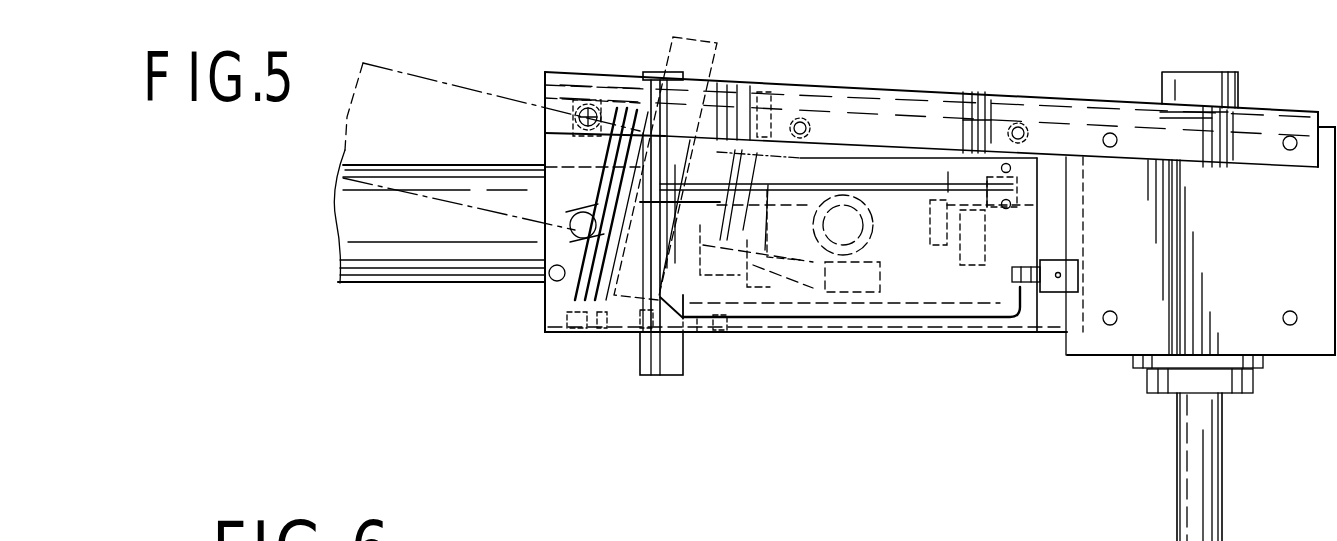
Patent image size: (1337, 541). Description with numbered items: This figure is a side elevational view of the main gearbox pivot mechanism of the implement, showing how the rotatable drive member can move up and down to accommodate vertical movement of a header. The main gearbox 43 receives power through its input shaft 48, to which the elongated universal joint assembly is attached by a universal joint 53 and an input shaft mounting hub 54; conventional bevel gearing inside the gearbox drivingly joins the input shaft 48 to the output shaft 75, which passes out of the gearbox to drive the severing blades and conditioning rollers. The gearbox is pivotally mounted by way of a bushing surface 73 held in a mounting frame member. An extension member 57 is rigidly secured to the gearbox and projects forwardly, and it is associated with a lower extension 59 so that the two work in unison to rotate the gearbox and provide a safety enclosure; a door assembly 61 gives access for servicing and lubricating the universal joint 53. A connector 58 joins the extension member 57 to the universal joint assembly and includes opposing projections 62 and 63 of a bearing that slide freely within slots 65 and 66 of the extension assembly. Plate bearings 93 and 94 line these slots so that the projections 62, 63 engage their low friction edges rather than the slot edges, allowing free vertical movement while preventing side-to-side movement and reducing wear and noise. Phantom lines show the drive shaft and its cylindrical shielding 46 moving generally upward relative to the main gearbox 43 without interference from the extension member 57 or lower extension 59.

The main gearbox 43 is at (1311, 326).
The cylindrical shielding 46 is at (447, 278).
The input shaft 48 is at (1045, 208).
The universal joint 53 is at (898, 250).
The input shaft mounting hub 54 is at (962, 272).
The extension member 57 is at (1137, 98).
The connector 58 is at (632, 358).
The lower extension 59 is at (977, 325).
The door assembly 61 is at (1013, 295).
The projection 62 is at (647, 72).
The projection 63 is at (683, 363).
The slot 65 is at (703, 90).
The slot 66 is at (620, 337).
The bushing surface 73 is at (1232, 90).
The output shaft 75 is at (1180, 442).
The plate bearing 93 is at (758, 98).
The plate bearing 94 is at (728, 320).